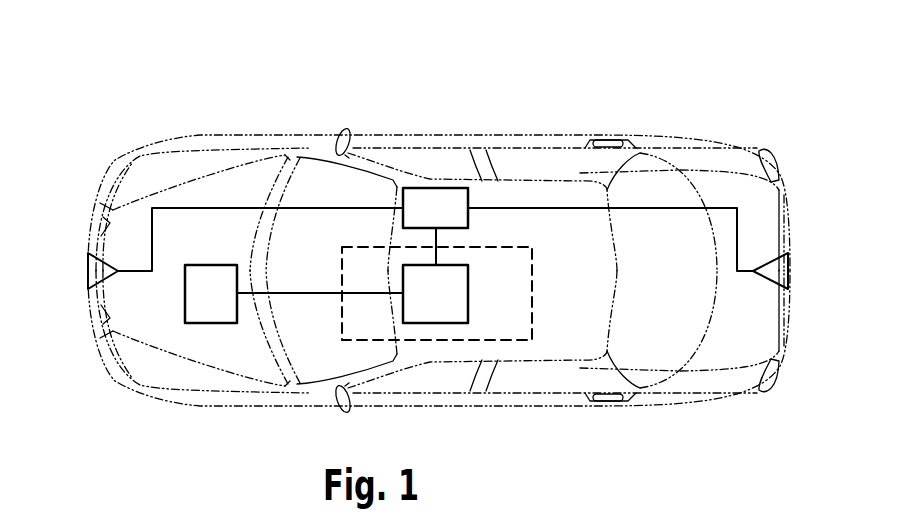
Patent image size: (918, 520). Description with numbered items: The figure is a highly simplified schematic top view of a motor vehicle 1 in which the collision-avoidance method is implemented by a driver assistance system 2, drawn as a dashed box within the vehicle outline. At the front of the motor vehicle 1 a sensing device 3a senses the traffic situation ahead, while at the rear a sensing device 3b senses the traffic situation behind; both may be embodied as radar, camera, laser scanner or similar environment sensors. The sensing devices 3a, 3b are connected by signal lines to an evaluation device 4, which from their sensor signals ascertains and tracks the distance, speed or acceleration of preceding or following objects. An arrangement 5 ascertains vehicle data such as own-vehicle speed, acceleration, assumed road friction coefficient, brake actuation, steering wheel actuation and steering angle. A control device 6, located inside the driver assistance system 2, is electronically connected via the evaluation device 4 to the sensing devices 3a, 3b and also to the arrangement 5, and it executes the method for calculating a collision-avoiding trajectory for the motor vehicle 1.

The motor vehicle 1 is at (522, 88).
The driver assistance system 2 is at (383, 340).
The sensing device 3a is at (100, 268).
The sensing device 3b is at (777, 270).
The evaluation device 4 is at (436, 207).
The arrangement for ascertaining vehicle data 5 is at (210, 298).
The control device 6 is at (437, 298).